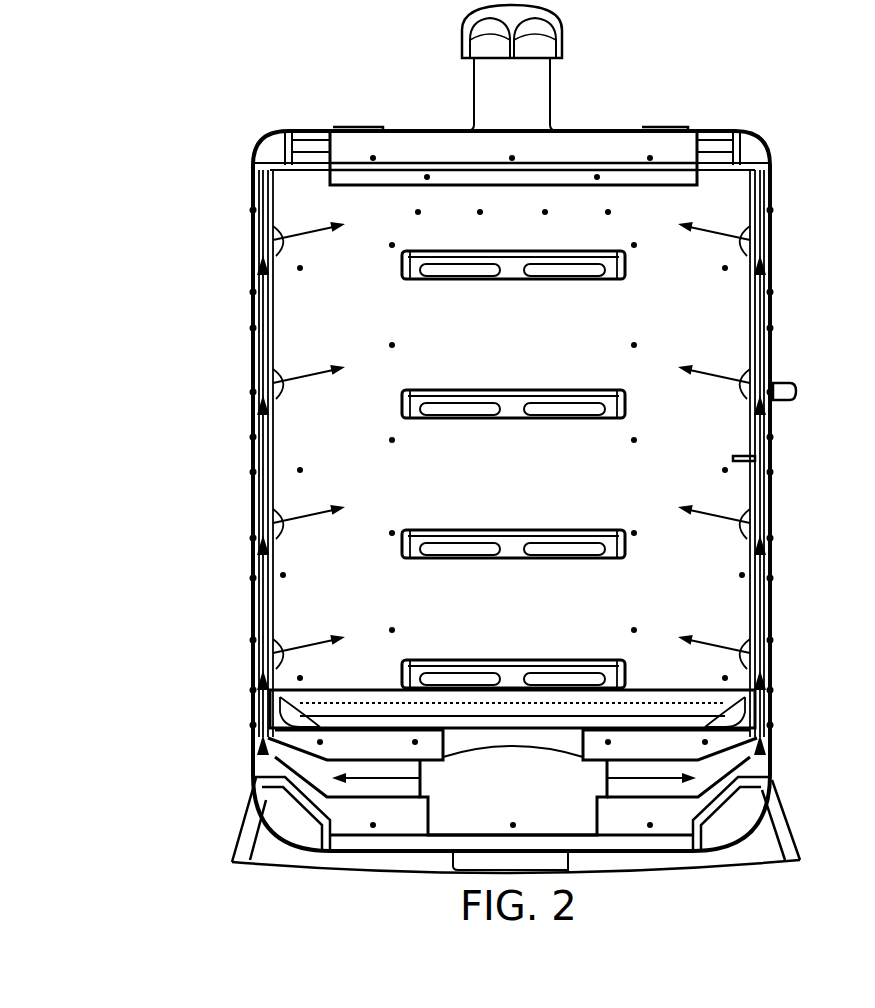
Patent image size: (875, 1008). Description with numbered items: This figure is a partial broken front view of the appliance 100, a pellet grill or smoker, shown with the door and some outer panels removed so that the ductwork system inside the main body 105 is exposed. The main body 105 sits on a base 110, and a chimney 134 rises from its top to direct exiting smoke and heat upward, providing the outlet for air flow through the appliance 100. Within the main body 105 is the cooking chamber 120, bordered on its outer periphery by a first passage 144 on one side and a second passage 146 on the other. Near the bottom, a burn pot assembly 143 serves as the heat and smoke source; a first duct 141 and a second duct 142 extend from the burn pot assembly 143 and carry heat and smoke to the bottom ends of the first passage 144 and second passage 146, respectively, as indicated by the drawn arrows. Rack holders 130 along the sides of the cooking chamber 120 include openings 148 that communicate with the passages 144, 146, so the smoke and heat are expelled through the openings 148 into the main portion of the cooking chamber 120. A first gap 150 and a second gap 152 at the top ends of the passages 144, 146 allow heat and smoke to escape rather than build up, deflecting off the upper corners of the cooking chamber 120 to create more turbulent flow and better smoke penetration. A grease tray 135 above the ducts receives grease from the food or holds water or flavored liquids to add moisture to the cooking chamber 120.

The appliance 100 is at (118, 103).
The main body 105 is at (283, 105).
The base 110 is at (782, 840).
The cooking chamber 120 is at (652, 345).
The rack holders 130 is at (262, 242).
The chimney 134 is at (513, 100).
The grease tray 135 is at (260, 684).
The first duct 141 is at (302, 770).
The second duct 142 is at (745, 765).
The burn pot assembly 143 is at (535, 797).
The first passage 144 is at (262, 492).
The second passage 146 is at (770, 597).
The openings 148 is at (268, 246).
The first gap 150 is at (258, 178).
The second gap 152 is at (772, 200).